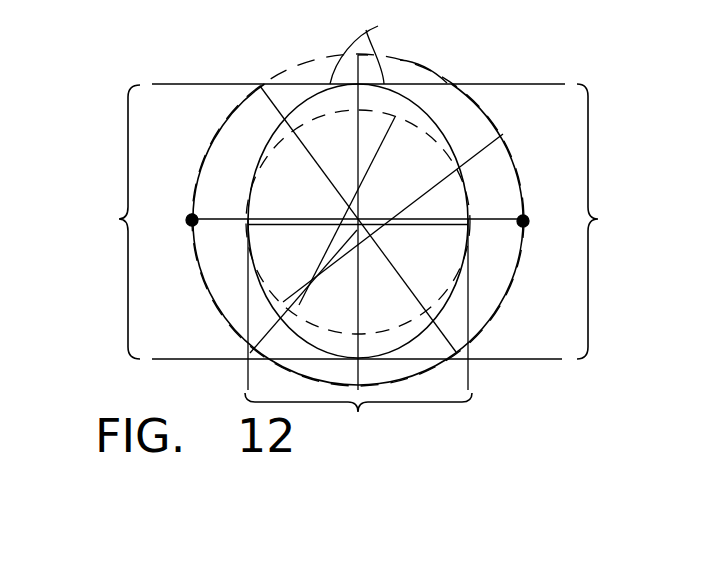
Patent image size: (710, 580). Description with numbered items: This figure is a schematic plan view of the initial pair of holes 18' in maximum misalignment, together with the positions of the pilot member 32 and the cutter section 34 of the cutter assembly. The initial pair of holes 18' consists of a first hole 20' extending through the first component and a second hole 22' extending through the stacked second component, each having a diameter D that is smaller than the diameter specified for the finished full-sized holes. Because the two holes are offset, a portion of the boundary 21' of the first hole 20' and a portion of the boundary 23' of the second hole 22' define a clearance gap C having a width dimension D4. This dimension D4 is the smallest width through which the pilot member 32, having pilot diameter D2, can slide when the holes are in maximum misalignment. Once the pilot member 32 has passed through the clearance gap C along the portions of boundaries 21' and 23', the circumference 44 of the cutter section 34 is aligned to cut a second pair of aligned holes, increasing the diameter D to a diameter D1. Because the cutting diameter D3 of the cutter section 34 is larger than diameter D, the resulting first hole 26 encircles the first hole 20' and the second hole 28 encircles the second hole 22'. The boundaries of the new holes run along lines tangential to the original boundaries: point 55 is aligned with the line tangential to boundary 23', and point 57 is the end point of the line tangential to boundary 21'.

The initial pair of holes 18' is at (378, 47).
The first hole 20' is at (506, 221).
The second hole 22' is at (241, 199).
The first hole of second pair of aligned holes 26 is at (462, 58).
The second hole of second pair of aligned holes 28 is at (400, 60).
The boundary of first hole 21' is at (110, 222).
The boundary of second hole 23' is at (623, 221).
The pilot member 32 is at (317, 380).
The cutter section 34 is at (443, 363).
The circumference of cutter section 44 is at (420, 380).
The point 55 is at (190, 224).
The point 57 is at (525, 226).
The diameter of initial pair of holes D is at (287, 218).
The diameter of second pair of aligned holes D1 is at (360, 288).
The pilot diameter D2 is at (380, 150).
The cutting diameter D3 is at (383, 253).
The width dimension of clearance gap D4 is at (323, 226).
The clearance gap C is at (358, 412).